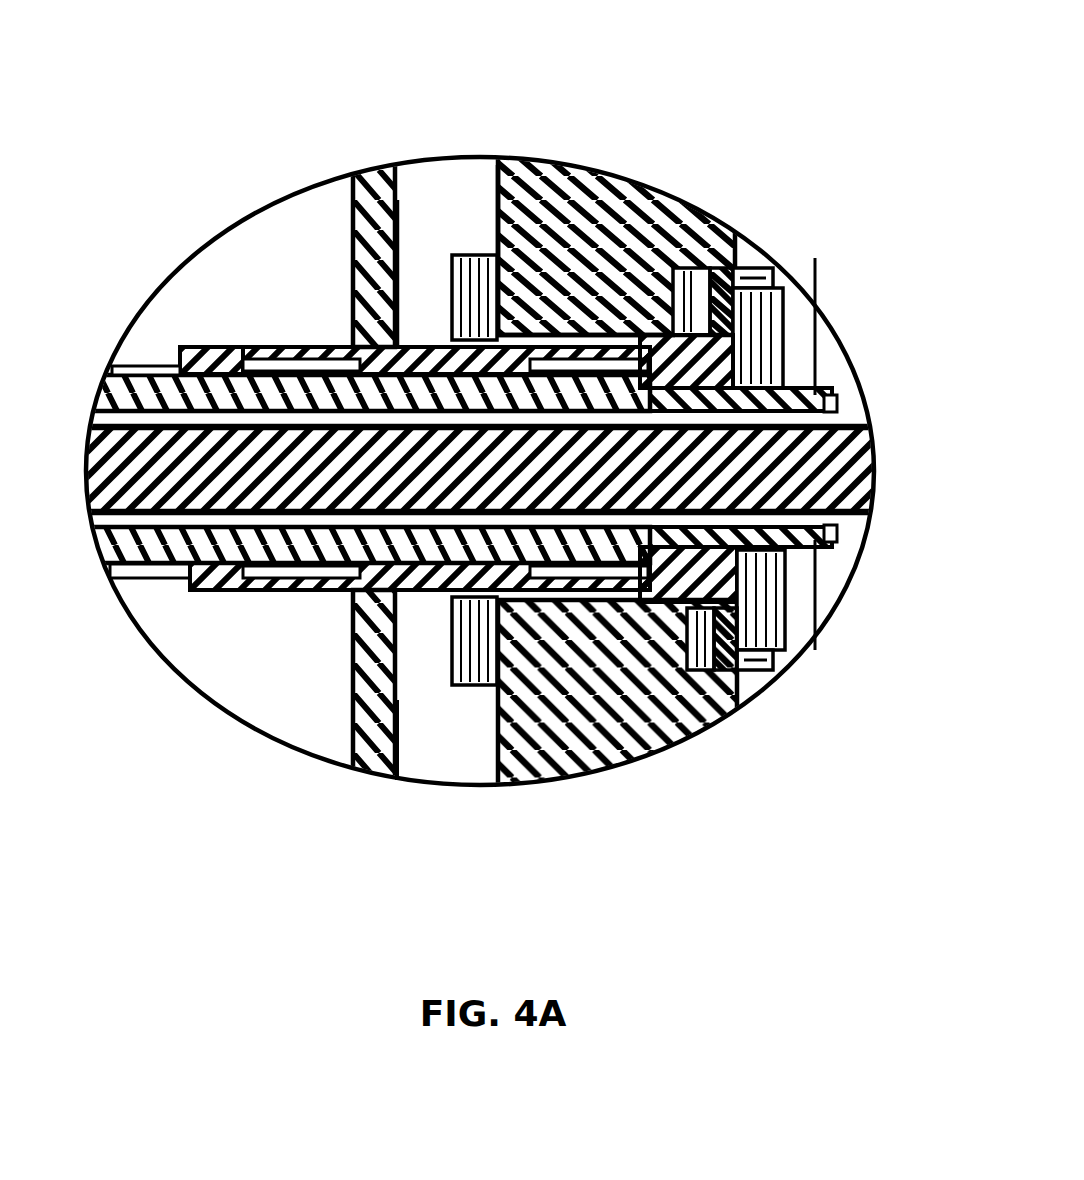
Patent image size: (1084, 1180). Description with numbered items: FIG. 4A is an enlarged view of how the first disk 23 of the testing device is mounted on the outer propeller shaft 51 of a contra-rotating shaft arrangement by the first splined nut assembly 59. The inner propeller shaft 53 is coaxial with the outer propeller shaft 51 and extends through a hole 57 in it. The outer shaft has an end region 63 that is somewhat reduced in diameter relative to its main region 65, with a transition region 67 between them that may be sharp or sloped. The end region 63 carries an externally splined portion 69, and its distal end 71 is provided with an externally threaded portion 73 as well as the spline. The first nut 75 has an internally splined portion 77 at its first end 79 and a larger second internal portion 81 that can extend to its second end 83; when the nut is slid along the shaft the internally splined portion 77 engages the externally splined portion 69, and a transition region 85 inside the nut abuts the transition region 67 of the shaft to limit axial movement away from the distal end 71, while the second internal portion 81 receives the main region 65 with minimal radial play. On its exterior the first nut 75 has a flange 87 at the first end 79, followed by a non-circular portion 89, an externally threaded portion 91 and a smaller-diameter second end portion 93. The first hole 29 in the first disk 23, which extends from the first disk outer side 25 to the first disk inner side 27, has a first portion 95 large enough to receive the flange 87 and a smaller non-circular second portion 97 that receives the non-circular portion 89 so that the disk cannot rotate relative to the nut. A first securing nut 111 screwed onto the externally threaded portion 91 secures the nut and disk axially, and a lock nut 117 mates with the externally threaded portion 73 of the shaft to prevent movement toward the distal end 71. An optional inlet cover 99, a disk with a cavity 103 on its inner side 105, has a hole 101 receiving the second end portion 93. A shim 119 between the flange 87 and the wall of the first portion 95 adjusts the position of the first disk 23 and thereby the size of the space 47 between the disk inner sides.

The first disk 23 is at (612, 186).
The first disk outer side 25 is at (493, 190).
The first disk inner side 27 is at (752, 281).
The first hole 29 is at (530, 352).
The space 47 is at (805, 625).
The outer propeller shaft 51 is at (147, 578).
The inner propeller shaft 53 is at (884, 482).
The hole 57 is at (90, 516).
The first splined nut assembly 59 is at (239, 610).
The end region 63 is at (800, 386).
The main region 65 is at (270, 380).
The transition region 67 is at (752, 660).
The externally splined portion 69 is at (705, 356).
The distal end 71 is at (834, 407).
The externally threaded portion 73 is at (828, 397).
The first nut 75 is at (285, 593).
The internally splined portion 77 is at (803, 583).
The first end 79 is at (840, 542).
The second internal portion 81 is at (215, 381).
The second end 83 is at (187, 365).
The transition region 85 is at (672, 700).
The exterior flange 87 is at (690, 372).
The non-circular portion 89 is at (630, 336).
The externally threaded portion 91 is at (432, 338).
The second end portion 93 is at (312, 345).
The first portion 95 is at (747, 283).
The second portion 97 is at (645, 345).
The inlet cover 99 is at (368, 784).
The hole 101 is at (401, 608).
The cavity 103 is at (478, 752).
The inner side 105 is at (430, 670).
The first securing nut 111 is at (475, 290).
The lock nut 117 is at (816, 630).
The shim 119 is at (703, 688).